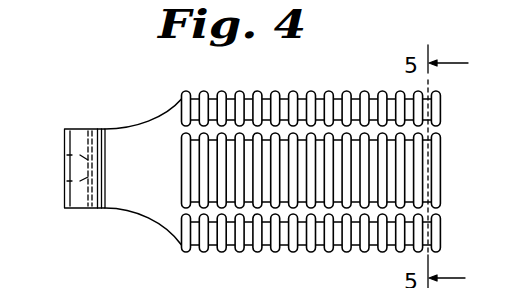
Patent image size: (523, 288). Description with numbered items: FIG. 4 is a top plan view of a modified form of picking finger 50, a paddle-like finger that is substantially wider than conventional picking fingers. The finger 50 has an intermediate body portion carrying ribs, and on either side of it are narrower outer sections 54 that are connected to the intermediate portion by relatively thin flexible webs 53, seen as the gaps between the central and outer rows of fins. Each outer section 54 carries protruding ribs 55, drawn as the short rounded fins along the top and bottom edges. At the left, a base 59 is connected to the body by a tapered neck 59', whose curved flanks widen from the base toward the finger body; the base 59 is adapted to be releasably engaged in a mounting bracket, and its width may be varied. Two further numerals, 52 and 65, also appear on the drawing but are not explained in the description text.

The finned heat exchanger core 50 is at (304, 167).
The central long fins 52 is at (201, 167).
The slot between fin rows 53 is at (428, 130).
The side fin band 54 is at (428, 108).
The short side fins 55 is at (220, 90).
The tubular inlet connector 59 is at (61, 180).
The flared transition section 59' is at (138, 225).
The conduit 65 is at (114, 287).